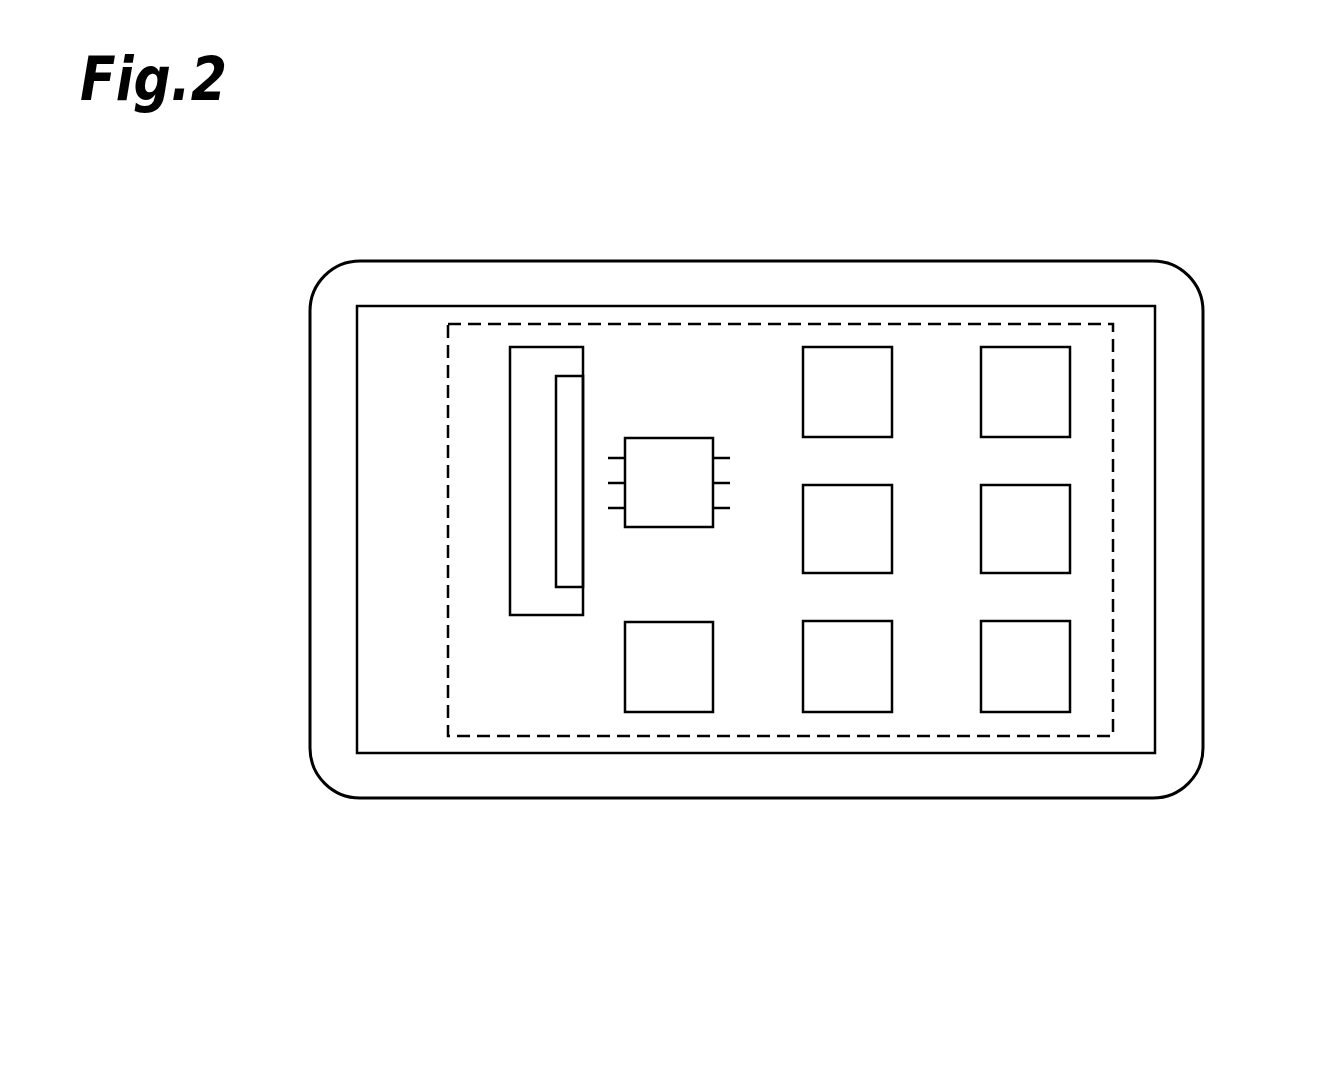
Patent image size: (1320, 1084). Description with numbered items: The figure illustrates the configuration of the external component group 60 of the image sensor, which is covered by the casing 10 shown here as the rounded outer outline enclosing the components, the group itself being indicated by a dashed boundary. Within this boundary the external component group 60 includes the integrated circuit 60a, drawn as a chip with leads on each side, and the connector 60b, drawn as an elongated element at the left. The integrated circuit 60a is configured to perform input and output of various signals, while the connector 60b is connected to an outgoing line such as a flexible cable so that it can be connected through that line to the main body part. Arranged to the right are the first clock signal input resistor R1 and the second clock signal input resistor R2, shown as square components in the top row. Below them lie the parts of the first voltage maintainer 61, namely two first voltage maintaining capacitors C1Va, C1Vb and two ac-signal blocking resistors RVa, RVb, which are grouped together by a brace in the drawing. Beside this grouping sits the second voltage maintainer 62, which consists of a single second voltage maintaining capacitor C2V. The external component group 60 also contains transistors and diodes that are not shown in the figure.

The casing 10 is at (1203, 450).
The external component group 60 is at (448, 635).
The integrated circuit 60a is at (672, 453).
The connector 60b is at (540, 367).
The first voltage maintainer 61 is at (1145, 883).
The second voltage maintainer 62 is at (622, 883).
The first clock signal input resistor R1 is at (853, 375).
The second clock signal input resistor R2 is at (1038, 367).
The first voltage maintaining capacitor C1Va is at (820, 548).
The first voltage maintaining capacitor C1Vb is at (1038, 540).
The ac-signal blocking resistor RVa is at (862, 683).
The ac-signal blocking resistor RVb is at (1013, 692).
The second voltage maintaining capacitor C2V is at (667, 678).